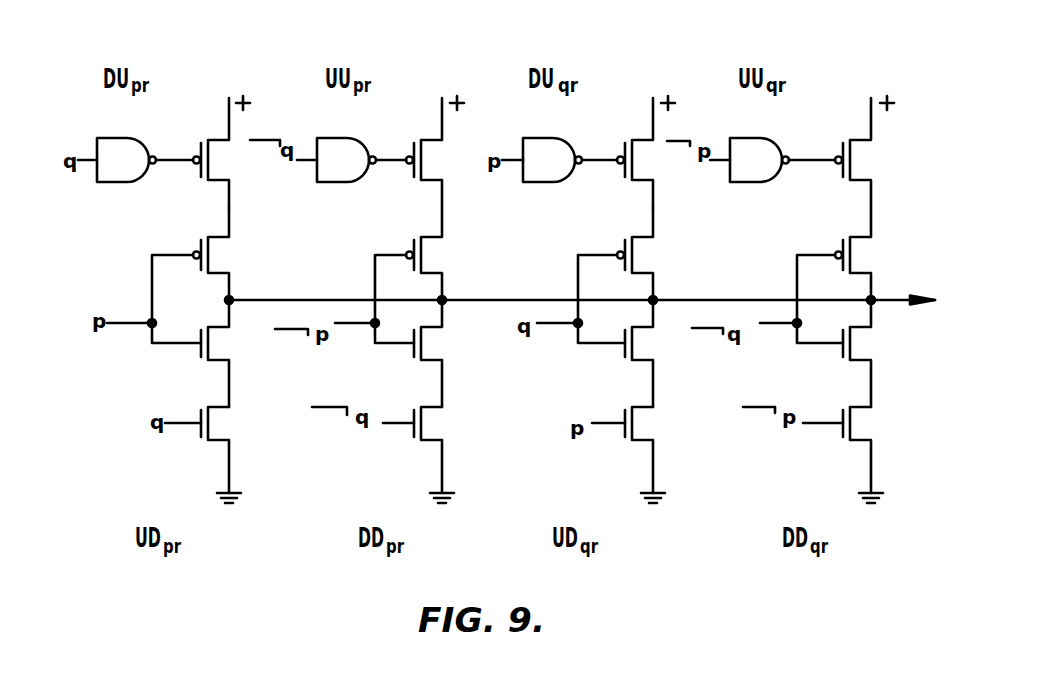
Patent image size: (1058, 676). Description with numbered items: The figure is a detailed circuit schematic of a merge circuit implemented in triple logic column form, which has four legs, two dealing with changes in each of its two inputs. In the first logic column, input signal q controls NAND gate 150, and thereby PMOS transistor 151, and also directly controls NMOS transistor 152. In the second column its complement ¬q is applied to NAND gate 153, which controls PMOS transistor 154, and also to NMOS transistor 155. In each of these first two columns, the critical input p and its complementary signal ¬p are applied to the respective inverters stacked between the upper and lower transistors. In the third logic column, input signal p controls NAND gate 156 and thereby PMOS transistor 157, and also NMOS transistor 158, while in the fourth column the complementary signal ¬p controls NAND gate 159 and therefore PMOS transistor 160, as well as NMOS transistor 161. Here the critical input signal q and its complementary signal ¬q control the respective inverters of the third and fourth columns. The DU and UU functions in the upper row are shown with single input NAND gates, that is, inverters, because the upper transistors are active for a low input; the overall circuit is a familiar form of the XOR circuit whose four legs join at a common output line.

The NAND gate 150 is at (119, 140).
The PMOS transistor 151 is at (228, 162).
The NMOS transistor 152 is at (230, 425).
The NAND gate 153 is at (339, 140).
The PMOS transistor 154 is at (439, 167).
The NMOS transistor 155 is at (438, 428).
The NAND gate 156 is at (552, 140).
The PMOS transistor 157 is at (647, 166).
The NMOS transistor 158 is at (643, 430).
The NAND gate 159 is at (760, 142).
The PMOS transistor 160 is at (855, 166).
The NMOS transistor 161 is at (860, 428).